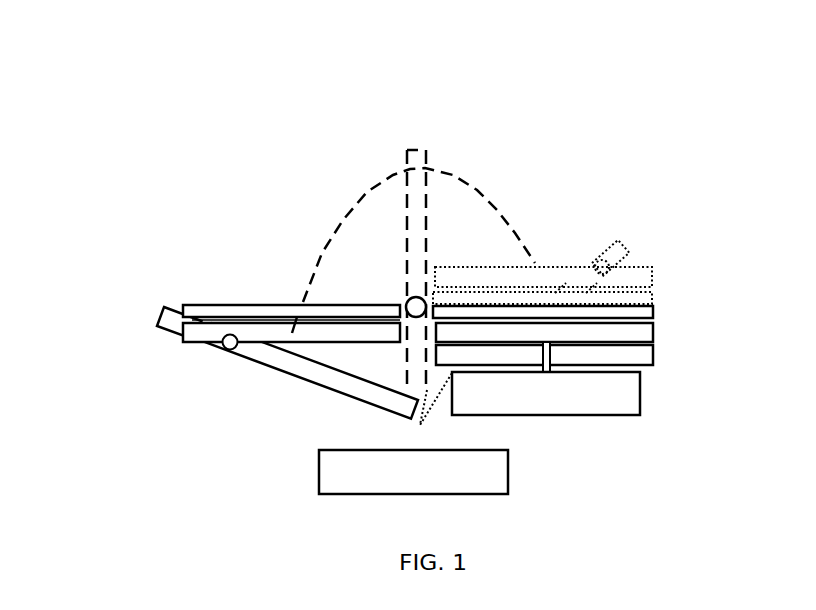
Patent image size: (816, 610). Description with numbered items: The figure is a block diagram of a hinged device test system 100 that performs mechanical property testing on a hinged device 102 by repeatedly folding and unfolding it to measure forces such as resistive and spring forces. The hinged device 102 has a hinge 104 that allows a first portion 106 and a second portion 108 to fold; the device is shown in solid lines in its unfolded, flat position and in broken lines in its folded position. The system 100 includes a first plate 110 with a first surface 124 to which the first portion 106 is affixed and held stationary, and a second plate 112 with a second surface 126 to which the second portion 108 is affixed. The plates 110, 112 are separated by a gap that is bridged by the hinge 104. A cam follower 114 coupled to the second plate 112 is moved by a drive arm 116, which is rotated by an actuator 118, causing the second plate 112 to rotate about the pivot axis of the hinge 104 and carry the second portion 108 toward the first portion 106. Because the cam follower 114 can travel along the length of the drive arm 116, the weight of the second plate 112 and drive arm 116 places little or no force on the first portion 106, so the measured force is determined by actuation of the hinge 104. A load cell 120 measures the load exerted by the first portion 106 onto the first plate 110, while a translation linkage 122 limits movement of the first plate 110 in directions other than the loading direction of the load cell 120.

The hinged device test system 100 is at (382, 274).
The hinged device 102 is at (419, 273).
The hinge 104 is at (385, 295).
The first portion 106 is at (448, 324).
The second portion 108 is at (449, 294).
The first plate 110 is at (575, 344).
The second plate 112 is at (419, 308).
The cam follower 114 is at (389, 305).
The drive arm 116 is at (446, 273).
The actuator 118 is at (382, 489).
The load cell 120 is at (581, 412).
The translation linkage 122 is at (576, 368).
The first surface 124 is at (470, 282).
The second surface 126 is at (394, 274).